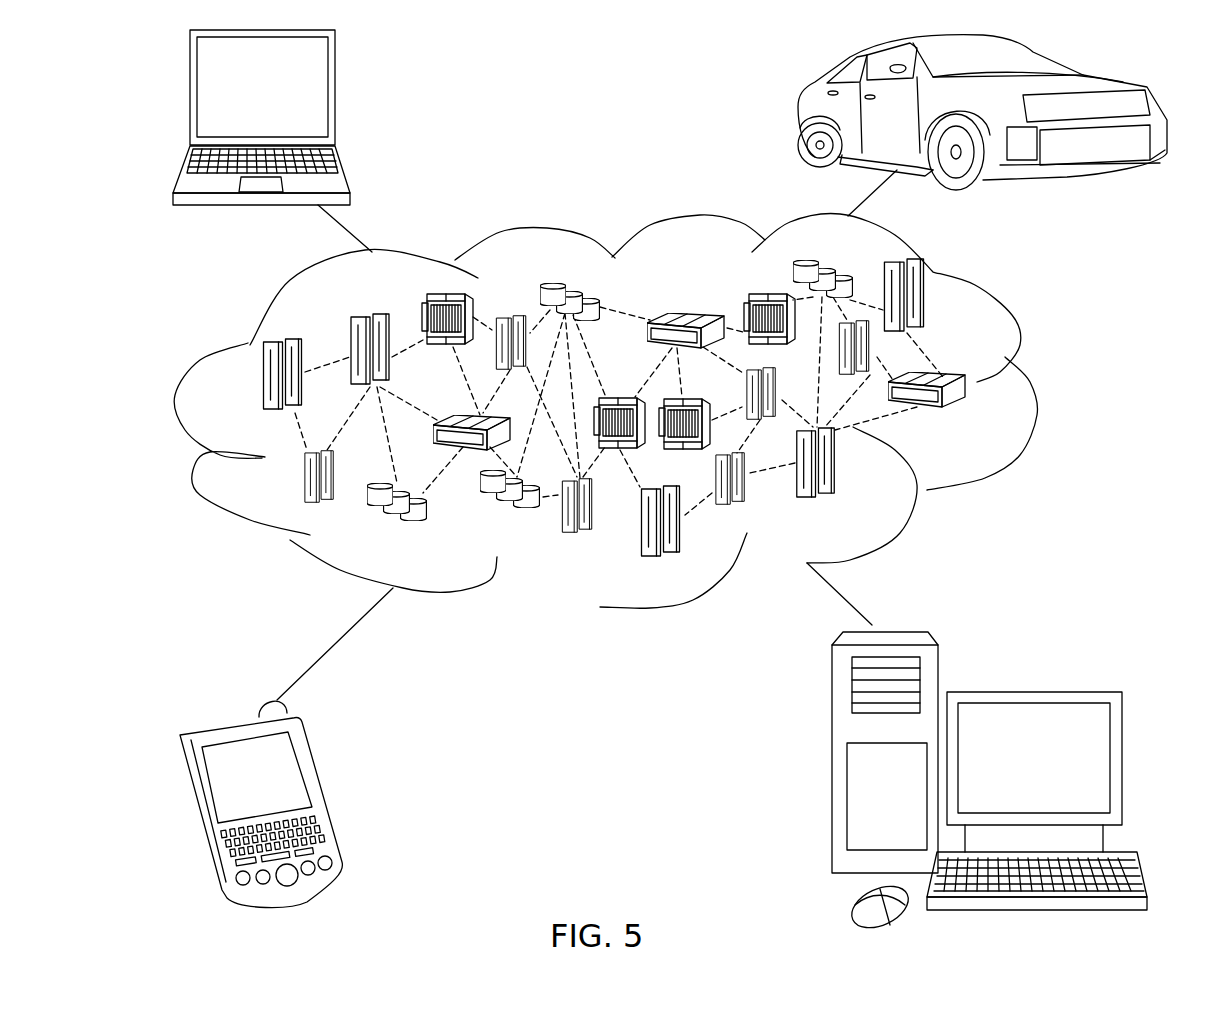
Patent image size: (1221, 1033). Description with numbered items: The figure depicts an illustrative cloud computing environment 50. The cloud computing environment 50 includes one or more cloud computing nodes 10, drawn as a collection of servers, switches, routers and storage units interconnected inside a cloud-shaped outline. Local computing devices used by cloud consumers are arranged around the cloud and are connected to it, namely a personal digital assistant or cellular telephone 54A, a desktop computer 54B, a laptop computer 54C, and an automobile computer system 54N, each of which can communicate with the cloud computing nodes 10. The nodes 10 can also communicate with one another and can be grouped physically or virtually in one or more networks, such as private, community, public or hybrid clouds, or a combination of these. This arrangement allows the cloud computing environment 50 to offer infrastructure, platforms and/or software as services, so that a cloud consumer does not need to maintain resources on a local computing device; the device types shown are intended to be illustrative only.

The cloud computing node 10 is at (985, 420).
The cloud computing environment 50 is at (634, 410).
The personal digital assistant (PDA) or cellular telephone 54A is at (323, 790).
The desktop computer 54B is at (1031, 692).
The laptop computer 54C is at (335, 95).
The automobile computer system 54N is at (800, 110).